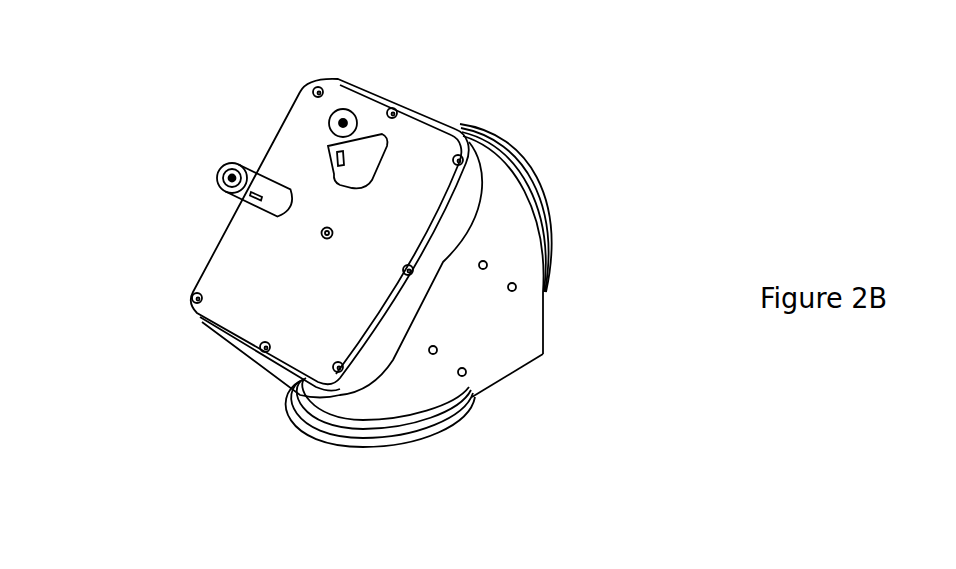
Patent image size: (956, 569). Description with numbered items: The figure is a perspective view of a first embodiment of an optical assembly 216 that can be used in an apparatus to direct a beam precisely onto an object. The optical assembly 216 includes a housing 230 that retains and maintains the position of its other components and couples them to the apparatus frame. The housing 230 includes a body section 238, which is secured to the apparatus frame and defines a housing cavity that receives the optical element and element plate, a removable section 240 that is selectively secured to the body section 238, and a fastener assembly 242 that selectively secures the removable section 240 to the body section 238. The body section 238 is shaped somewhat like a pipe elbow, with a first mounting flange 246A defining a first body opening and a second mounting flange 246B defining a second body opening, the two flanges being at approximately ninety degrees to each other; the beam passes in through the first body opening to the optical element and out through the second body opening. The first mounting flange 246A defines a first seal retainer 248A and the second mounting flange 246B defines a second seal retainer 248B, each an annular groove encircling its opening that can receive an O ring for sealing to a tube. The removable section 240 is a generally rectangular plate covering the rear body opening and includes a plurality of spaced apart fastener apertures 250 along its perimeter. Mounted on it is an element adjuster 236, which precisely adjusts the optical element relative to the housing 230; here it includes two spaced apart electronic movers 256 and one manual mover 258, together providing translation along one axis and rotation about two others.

The optical assembly 216 is at (500, 76).
The housing 230 is at (520, 315).
The element adjuster 236 is at (231, 152).
The body section 238 is at (552, 379).
The removable section 240 is at (336, 214).
The fastener assembly 242 is at (300, 51).
The first mounting flange 246A is at (576, 208).
The second mounting flange 246B is at (380, 452).
The first seal retainer 248A is at (556, 197).
The second seal retainer 248B is at (443, 424).
The fastener apertures 250 is at (132, 280).
The electronic movers 256 is at (258, 208).
The manual mover 258 is at (218, 314).